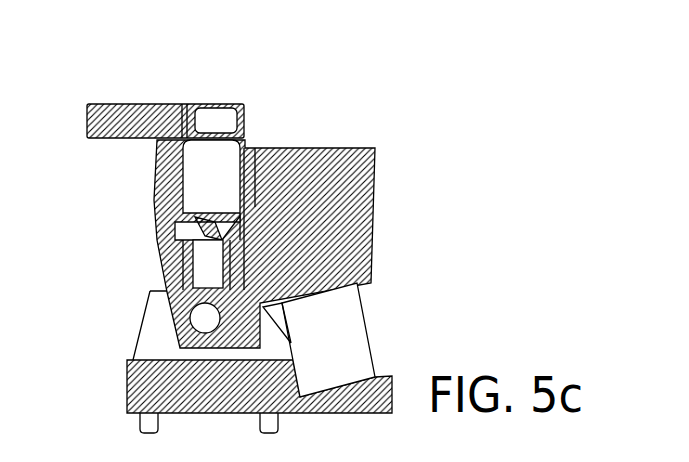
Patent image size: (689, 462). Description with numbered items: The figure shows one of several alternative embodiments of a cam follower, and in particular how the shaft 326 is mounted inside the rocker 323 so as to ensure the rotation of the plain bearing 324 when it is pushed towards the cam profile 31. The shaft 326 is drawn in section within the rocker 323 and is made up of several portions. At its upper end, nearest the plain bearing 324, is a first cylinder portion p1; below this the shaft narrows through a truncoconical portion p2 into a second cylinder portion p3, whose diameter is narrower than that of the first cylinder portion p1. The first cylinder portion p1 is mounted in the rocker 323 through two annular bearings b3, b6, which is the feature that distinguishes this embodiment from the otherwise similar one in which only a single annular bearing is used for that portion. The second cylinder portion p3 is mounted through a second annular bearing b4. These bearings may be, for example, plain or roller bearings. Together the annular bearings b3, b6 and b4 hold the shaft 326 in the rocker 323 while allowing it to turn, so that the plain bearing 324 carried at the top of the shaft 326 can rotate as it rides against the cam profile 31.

The cam profile 31 is at (115, 133).
The plain bearing 324 is at (217, 118).
The shaft 326 is at (258, 140).
The rocker 323 is at (347, 153).
The annular bearing b3 is at (253, 171).
The annular bearing b6 is at (253, 200).
The second annular bearing b4 is at (180, 258).
The first cylinder portion p1 is at (211, 176).
The truncoconical portion p2 is at (203, 225).
The second cylinder portion p3 is at (203, 253).